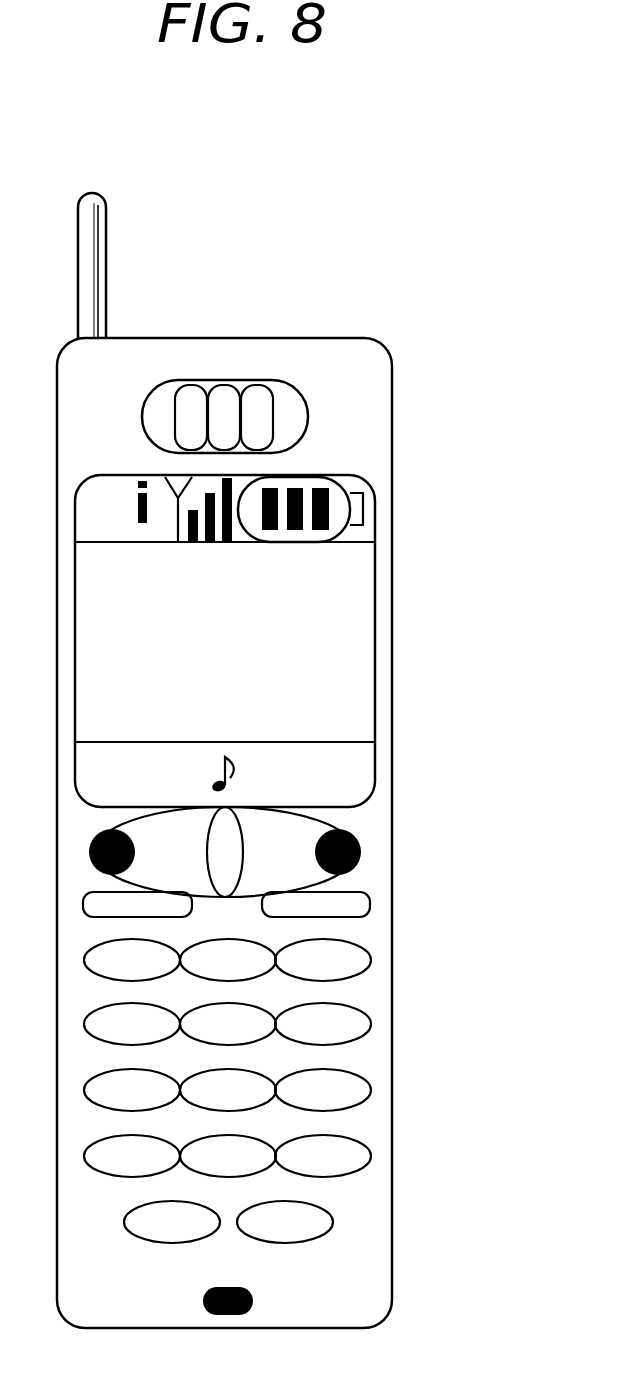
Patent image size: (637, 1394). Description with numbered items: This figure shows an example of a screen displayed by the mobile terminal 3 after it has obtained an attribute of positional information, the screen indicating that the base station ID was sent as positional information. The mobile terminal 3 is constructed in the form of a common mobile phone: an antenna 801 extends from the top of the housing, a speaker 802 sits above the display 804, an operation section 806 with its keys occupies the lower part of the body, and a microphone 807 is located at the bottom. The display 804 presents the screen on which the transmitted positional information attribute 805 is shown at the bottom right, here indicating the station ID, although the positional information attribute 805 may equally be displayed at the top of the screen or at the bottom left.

The mobile terminal 3 is at (125, 138).
The antenna 801 is at (107, 222).
The speaker 802 is at (258, 380).
The display 804 is at (376, 598).
The positional information attribute 805 is at (363, 748).
The operation section 806 is at (407, 815).
The microphone 807 is at (253, 1300).